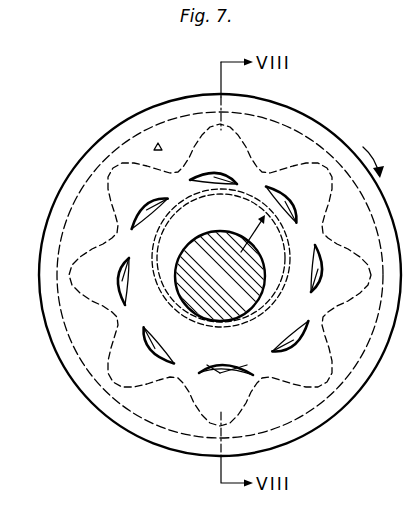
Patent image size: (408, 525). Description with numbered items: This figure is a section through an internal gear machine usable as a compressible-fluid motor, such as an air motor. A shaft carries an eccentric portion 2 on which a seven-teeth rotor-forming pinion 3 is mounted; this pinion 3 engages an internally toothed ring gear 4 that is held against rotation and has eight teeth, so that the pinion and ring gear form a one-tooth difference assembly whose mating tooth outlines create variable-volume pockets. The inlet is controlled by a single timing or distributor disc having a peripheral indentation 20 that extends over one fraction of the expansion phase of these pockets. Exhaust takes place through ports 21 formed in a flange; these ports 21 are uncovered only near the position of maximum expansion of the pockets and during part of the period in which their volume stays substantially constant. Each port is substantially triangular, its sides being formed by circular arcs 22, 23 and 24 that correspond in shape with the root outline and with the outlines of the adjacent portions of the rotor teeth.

The eccentric portion 2 is at (245, 197).
The rotor-forming pinion 3 is at (341, 296).
The ring gear 4 is at (332, 143).
The peripheral indentation 20 is at (158, 143).
The ports 21 is at (293, 208).
The circular arc 22 is at (223, 361).
The circular arc 23 is at (206, 371).
The circular arc 24 is at (236, 373).